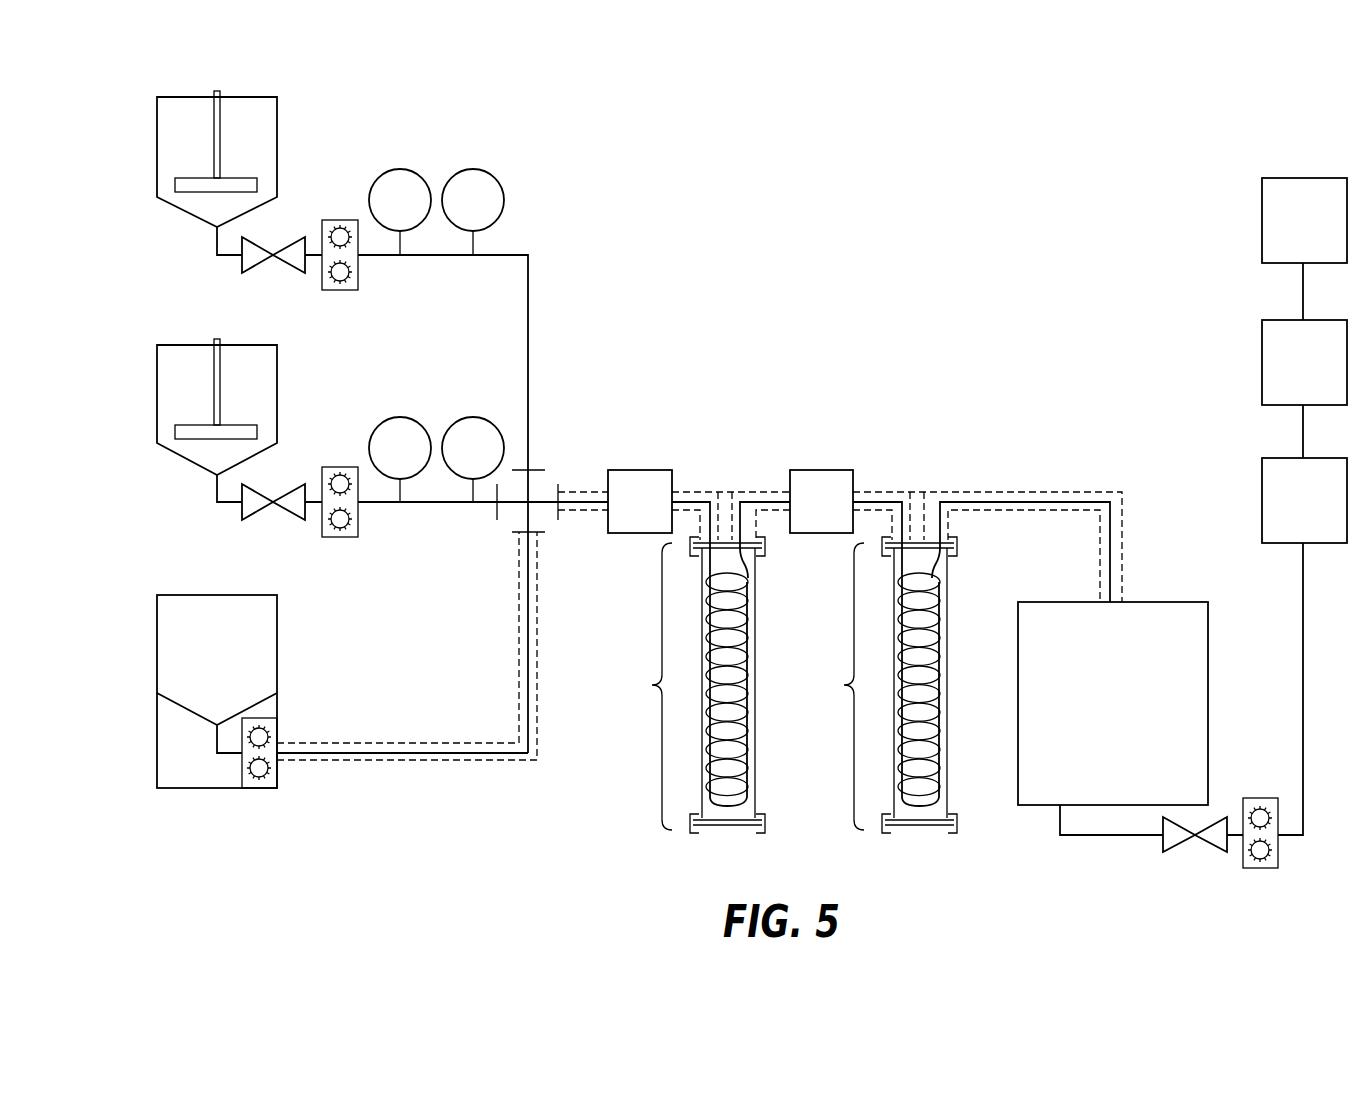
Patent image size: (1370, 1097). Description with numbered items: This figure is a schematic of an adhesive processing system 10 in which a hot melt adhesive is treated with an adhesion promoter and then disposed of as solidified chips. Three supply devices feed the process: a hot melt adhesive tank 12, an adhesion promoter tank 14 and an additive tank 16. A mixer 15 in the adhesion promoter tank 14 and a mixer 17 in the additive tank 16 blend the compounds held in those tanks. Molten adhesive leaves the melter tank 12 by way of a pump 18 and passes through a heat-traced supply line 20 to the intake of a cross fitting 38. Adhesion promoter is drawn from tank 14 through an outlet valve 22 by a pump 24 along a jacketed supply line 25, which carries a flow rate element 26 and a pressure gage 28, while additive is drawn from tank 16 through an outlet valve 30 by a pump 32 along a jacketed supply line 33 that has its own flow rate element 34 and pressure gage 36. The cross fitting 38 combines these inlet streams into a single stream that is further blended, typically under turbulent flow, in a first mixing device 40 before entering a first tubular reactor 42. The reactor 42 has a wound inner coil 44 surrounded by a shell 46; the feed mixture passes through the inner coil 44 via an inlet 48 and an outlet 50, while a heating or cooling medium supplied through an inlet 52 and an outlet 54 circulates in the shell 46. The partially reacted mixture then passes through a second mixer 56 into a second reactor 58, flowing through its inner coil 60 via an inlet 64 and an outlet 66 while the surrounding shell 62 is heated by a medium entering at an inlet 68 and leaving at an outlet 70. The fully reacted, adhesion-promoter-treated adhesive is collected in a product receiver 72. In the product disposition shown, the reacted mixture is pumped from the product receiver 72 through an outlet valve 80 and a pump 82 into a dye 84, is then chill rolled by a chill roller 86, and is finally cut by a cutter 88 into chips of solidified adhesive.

The system 10 is at (966, 135).
The hot melt adhesive tank 12 is at (277, 643).
The adhesion promoter tank 14 is at (278, 390).
The mixer 15 is at (247, 438).
The additive tank 16 is at (278, 142).
The mixer 17 is at (247, 190).
The pump 18 is at (272, 727).
The supply line 20 is at (387, 755).
The outlet valve 22 is at (247, 508).
The pump 24 is at (330, 540).
The supply line 25 is at (380, 507).
The flow rate element 26 is at (400, 416).
The pressure gage 28 is at (473, 416).
The outlet valve 30 is at (247, 260).
The pump 32 is at (330, 293).
The supply line 33 is at (380, 260).
The flow rate element 34 is at (400, 168).
The pressure gage 36 is at (473, 168).
The cross fitting valve 38 is at (549, 451).
The first mixing device 40 is at (642, 470).
The first tubular reactor 42 is at (777, 547).
The inner coil 44 is at (712, 805).
The shell 46 is at (646, 686).
The inlet 48 is at (705, 492).
The outlet 50 is at (772, 492).
The inlet 52 is at (765, 769).
The outlet 54 is at (757, 593).
The second mixer 56 is at (825, 470).
The second tubular reactor 58 is at (969, 546).
The inner coil 60 is at (904, 805).
The shell 62 is at (838, 686).
The inlet 64 is at (883, 500).
The outlet 66 is at (1022, 490).
The inlet 68 is at (957, 769).
The outlet 70 is at (949, 593).
The product receiver 72 is at (1145, 600).
The outlet valve 80 is at (1217, 817).
The pump 82 is at (1267, 798).
The dye 84 is at (1260, 500).
The chill roller 86 is at (1260, 362).
The cutter 88 is at (1260, 220).